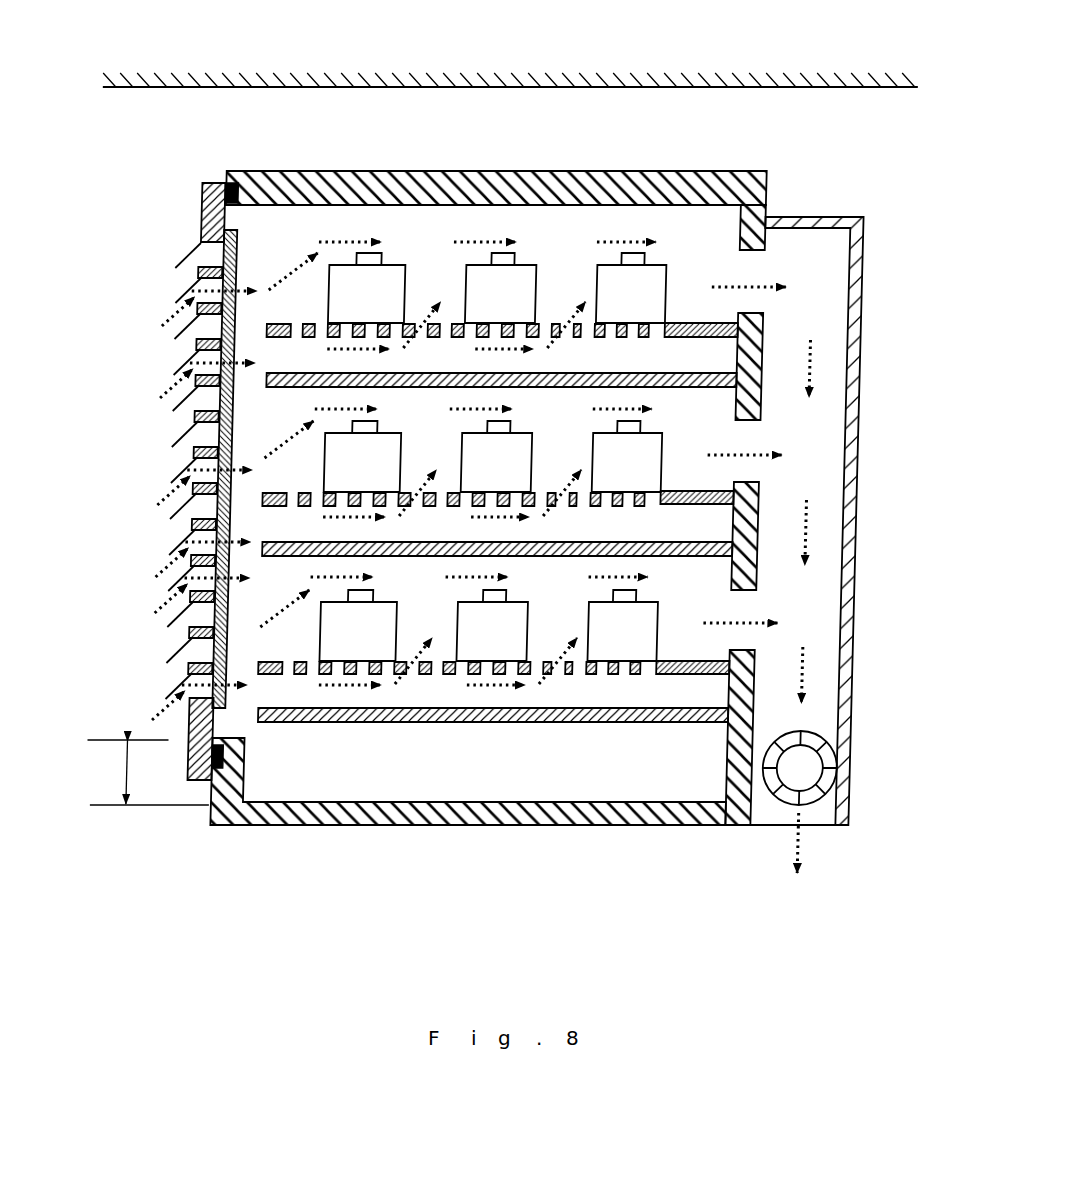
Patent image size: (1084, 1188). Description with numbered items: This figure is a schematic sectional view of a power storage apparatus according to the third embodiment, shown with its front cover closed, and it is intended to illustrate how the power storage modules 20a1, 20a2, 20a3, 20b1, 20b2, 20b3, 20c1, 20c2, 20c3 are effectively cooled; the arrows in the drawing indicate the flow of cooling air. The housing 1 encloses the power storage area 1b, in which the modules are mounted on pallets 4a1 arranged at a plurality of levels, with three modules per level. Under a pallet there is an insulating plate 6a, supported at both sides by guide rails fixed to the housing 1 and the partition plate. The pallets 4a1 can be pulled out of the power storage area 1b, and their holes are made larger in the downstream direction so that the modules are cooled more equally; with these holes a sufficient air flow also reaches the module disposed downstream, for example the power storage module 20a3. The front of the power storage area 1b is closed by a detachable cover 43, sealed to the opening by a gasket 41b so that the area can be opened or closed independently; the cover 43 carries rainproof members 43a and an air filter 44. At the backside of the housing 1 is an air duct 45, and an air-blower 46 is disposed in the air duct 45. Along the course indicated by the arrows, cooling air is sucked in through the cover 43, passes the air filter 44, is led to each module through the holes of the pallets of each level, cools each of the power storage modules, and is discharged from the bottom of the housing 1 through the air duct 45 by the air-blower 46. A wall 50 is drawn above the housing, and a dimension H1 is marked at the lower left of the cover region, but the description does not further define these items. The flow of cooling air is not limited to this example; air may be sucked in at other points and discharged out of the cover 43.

The wall 50 is at (674, 84).
The housing 1 is at (529, 170).
The power storage area 1b is at (593, 220).
The gasket 41b is at (226, 172).
The detachable cover 43 is at (202, 211).
The rainproof member 43a is at (200, 243).
The air filter 44 is at (239, 258).
The power storage module 20a1 is at (425, 266).
The power storage module 20a2 is at (556, 266).
The power storage module 20a3 is at (686, 266).
The pallet 4a1 is at (705, 323).
The insulating plate 6a is at (704, 373).
The power storage module 20b1 is at (425, 434).
The power storage module 20b2 is at (556, 434).
The power storage module 20b3 is at (686, 434).
The power storage module 20c1 is at (425, 603).
The power storage module 20c2 is at (556, 603).
The power storage module 20c3 is at (668, 610).
The air duct 45 is at (865, 712).
The air-blower 46 is at (853, 774).
The height dimension H1 is at (148, 772).